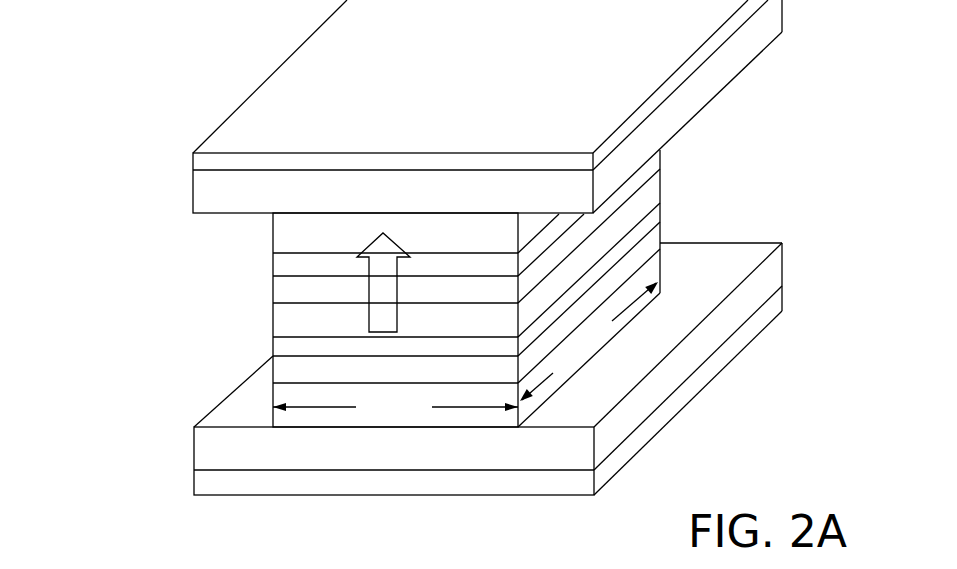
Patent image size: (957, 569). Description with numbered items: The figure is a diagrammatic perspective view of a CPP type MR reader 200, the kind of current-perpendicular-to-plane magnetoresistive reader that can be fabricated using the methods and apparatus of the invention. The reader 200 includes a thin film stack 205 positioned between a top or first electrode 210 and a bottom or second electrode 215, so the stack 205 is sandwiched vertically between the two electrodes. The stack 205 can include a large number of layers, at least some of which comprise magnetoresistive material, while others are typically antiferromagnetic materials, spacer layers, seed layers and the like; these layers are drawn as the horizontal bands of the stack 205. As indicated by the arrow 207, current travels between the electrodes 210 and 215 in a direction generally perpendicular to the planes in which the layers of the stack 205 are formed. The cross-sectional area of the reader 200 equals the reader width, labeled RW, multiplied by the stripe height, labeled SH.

The CPP type MR reader 200 is at (80, 220).
The thin film stack 205 is at (234, 305).
The arrow 207 is at (385, 263).
The top or first electrode 210 is at (199, 190).
The bottom or second electrode 215 is at (203, 443).